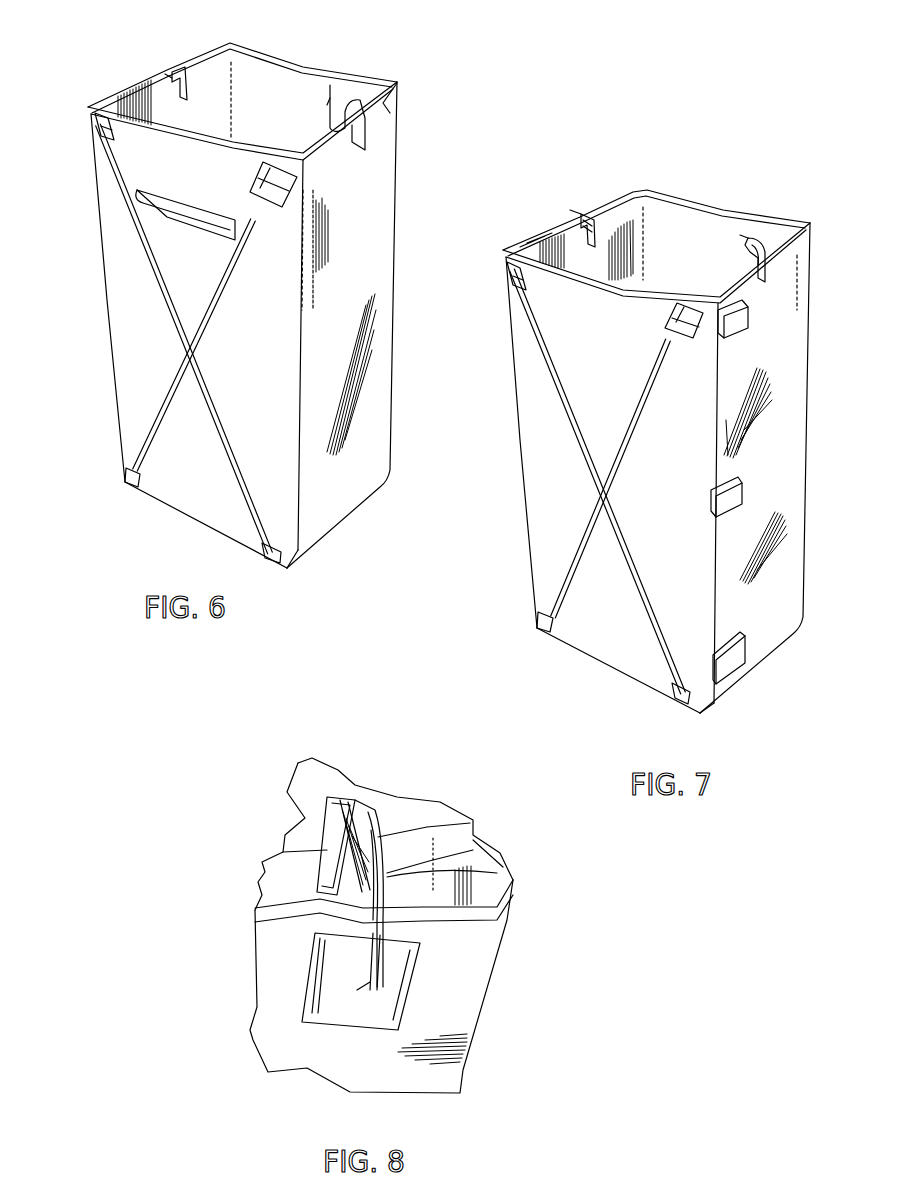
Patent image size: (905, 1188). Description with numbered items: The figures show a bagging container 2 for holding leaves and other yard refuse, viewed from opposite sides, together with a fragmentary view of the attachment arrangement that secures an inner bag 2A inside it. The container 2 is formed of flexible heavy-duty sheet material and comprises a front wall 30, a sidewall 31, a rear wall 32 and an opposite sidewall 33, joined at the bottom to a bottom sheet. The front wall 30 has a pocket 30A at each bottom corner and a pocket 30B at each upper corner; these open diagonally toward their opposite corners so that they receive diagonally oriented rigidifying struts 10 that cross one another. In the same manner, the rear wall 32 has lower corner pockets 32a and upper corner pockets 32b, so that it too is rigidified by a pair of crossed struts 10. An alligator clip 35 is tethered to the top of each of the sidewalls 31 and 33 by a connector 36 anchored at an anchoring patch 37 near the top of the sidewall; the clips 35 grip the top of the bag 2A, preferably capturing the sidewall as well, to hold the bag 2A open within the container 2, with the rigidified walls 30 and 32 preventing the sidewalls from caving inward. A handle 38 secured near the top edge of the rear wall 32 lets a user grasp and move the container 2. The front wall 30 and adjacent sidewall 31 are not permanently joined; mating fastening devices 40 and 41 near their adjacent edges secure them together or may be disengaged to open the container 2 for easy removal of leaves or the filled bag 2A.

In FIG. 6, the bagging container 2 is at (270, 292).
In FIG. 7, the bagging container 2 is at (656, 418).
In FIG. 8, the bagging container 2 is at (424, 909).
In FIG. 8, the bag 2A is at (477, 840).
In FIG. 6, the rigidifying struts 10 is at (212, 315).
In FIG. 7, the rigidifying struts 10 is at (577, 481).
In FIG. 6, the front wall 30 is at (293, 106).
In FIG. 7, the front wall 30 is at (607, 350).
In FIG. 6, the sidewall 31 is at (208, 121).
In FIG. 7, the sidewall 31 is at (783, 346).
In FIG. 6, the rear wall 32 is at (206, 181).
In FIG. 7, the rear wall 32 is at (723, 243).
In FIG. 6, the opposite sidewall 33 is at (370, 223).
In FIG. 7, the opposite sidewall 33 is at (617, 220).
In FIG. 7, the bottom corner pocket 30A is at (537, 620).
In FIG. 7, the upper corner pocket 30B is at (506, 274).
In FIG. 6, the lower corner pocket 32a is at (127, 470).
In FIG. 6, the upper corner pocket 32b is at (88, 117).
In FIG. 6, the alligator clip 35 is at (185, 92).
In FIG. 7, the alligator clip 35 is at (580, 237).
In FIG. 8, the alligator clip 35 is at (345, 797).
In FIG. 8, the connector 36 is at (497, 877).
In FIG. 8, the anchoring patch 37 is at (398, 963).
In FIG. 6, the handle 38 is at (143, 231).
In FIG. 7, the fastening device 40 is at (723, 340).
In FIG. 7, the fastening device 41 is at (757, 307).